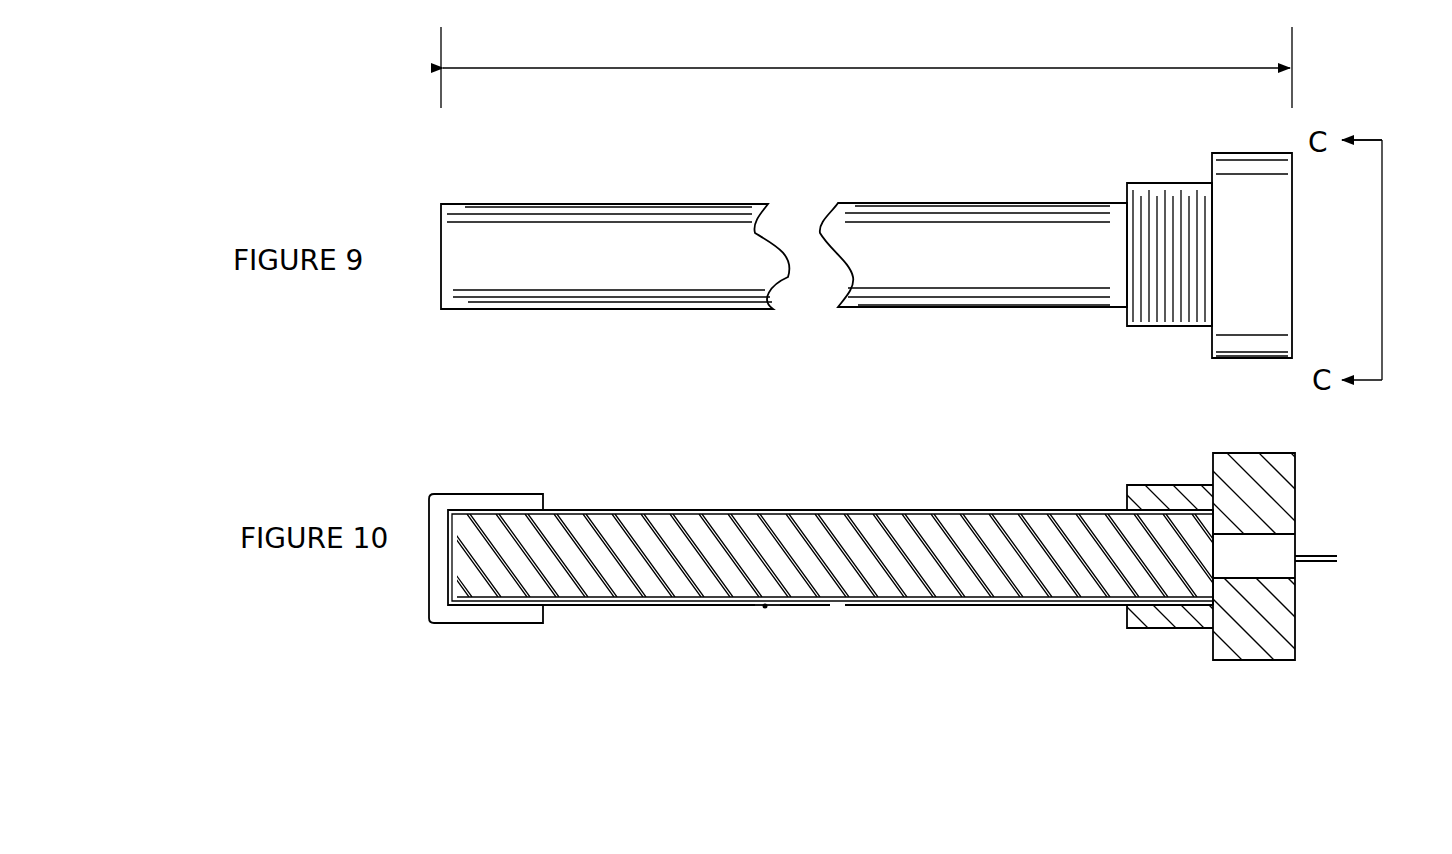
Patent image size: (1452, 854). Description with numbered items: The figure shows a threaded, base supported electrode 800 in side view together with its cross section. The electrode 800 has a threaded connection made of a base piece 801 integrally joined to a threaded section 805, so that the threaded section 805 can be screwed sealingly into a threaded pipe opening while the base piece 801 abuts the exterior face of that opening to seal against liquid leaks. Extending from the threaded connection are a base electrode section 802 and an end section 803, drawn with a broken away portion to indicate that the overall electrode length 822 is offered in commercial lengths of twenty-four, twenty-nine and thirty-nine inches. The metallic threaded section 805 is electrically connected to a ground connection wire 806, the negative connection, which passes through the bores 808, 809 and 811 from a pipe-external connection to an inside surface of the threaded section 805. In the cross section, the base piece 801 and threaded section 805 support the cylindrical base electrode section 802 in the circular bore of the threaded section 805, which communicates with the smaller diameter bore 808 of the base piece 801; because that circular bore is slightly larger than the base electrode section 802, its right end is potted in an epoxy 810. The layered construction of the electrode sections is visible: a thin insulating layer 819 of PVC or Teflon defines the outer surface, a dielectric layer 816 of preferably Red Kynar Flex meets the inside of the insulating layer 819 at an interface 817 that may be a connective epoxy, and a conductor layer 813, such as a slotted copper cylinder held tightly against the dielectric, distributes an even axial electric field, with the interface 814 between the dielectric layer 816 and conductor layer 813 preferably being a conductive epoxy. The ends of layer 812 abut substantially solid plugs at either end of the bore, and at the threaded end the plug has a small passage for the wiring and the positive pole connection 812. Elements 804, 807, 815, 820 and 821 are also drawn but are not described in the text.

In FIG. 9, the electrode 800 is at (418, 182).
In FIG. 9, the base piece 801 is at (1245, 363).
In FIG. 10, the base piece 801 is at (1232, 452).
In FIG. 9, the base electrode section 802 is at (963, 313).
In FIG. 10, the base electrode section 802 is at (970, 498).
In FIG. 9, the end section 803 is at (680, 317).
In FIG. 10, the end section 803 is at (680, 495).
In FIG. 10, the closed end cap 804 is at (462, 493).
In FIG. 9, the threaded section 805 is at (1166, 345).
In FIG. 10, the threaded section 805 is at (1168, 486).
In FIG. 10, the ground connection wire 806 is at (1316, 548).
In FIG. 10, the lead wire 807 is at (1303, 565).
In FIG. 10, the bore 808 is at (1283, 662).
In FIG. 10, the bore 809 is at (1197, 628).
In FIG. 10, the epoxy 810 is at (1150, 628).
In FIG. 10, the bore 811 is at (1148, 486).
In FIG. 10, the positive pole connection 812 is at (1052, 605).
In FIG. 10, the conductor layer 813 is at (875, 605).
In FIG. 10, the interface 814 is at (938, 605).
In FIG. 10, the inner layer 815 is at (793, 605).
In FIG. 10, the dielectric layer 816 is at (765, 607).
In FIG. 10, the interface 817 is at (738, 604).
In FIG. 10, the thin insulating layer 819 is at (680, 607).
In FIG. 10, the liner 820 is at (443, 600).
In FIG. 10, the end seal 821 is at (497, 608).
In FIG. 9, the overall electrode length 822 is at (866, 67).